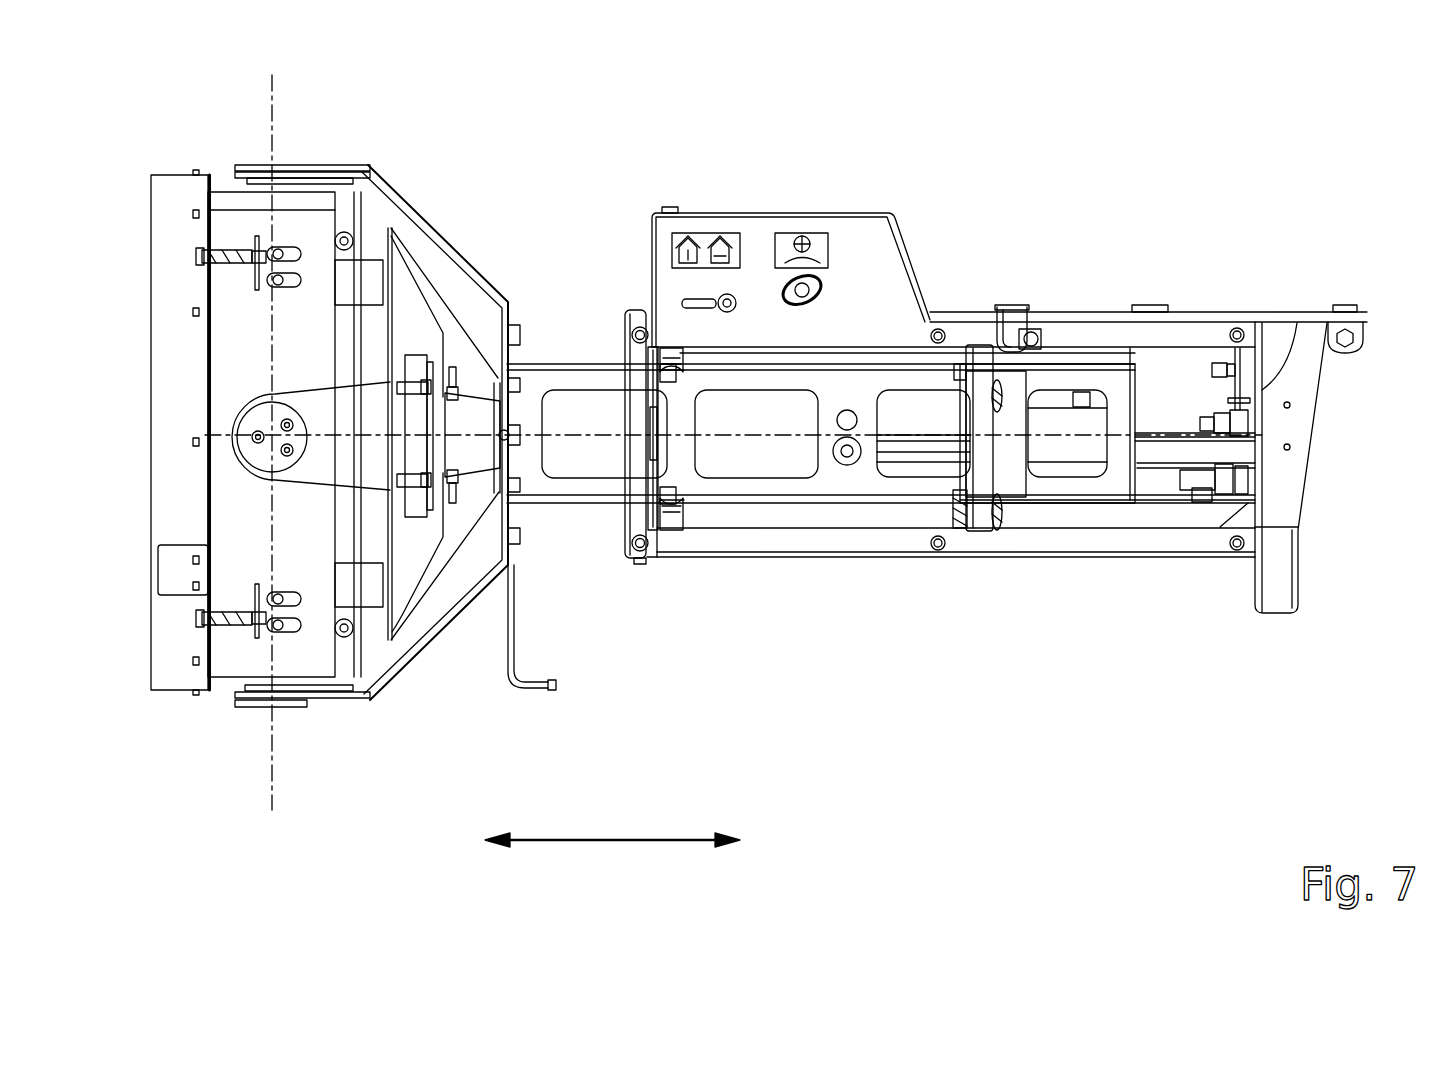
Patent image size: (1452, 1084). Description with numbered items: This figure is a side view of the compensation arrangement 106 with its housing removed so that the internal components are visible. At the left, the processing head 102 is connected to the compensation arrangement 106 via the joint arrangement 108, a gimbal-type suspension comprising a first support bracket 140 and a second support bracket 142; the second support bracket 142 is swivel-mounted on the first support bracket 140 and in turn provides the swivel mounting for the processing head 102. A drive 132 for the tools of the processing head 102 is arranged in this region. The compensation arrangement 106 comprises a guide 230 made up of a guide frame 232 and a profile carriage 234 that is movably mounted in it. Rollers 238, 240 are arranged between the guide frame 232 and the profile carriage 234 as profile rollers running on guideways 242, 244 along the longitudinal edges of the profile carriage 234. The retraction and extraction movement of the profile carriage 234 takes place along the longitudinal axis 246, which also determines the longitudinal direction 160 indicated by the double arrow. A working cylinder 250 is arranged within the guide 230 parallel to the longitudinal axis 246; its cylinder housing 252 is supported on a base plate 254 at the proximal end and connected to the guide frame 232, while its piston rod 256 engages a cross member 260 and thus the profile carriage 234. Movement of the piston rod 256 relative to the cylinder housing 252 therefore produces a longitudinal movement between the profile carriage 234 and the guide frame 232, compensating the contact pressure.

The processing head 102 is at (182, 733).
The compensation arrangement 106 is at (1145, 636).
The joint arrangement 108 is at (420, 177).
The drive 132 is at (465, 453).
The first support bracket 140 is at (453, 247).
The second support bracket 142 is at (332, 405).
The longitudinal direction 160 is at (622, 840).
The guide 230 is at (897, 575).
The guide frame 232 is at (975, 547).
The profile carriage 234 is at (845, 390).
The roller 238 is at (682, 513).
The roller 240 is at (995, 509).
The guideway 242 is at (606, 355).
The guideway 244 is at (553, 503).
The longitudinal axis 246 is at (580, 433).
The working cylinder 250 is at (1168, 416).
The cylinder housing 252 is at (1152, 460).
The base plate 254 is at (1295, 322).
The piston rod 256 is at (920, 440).
The cross member 260 is at (840, 464).